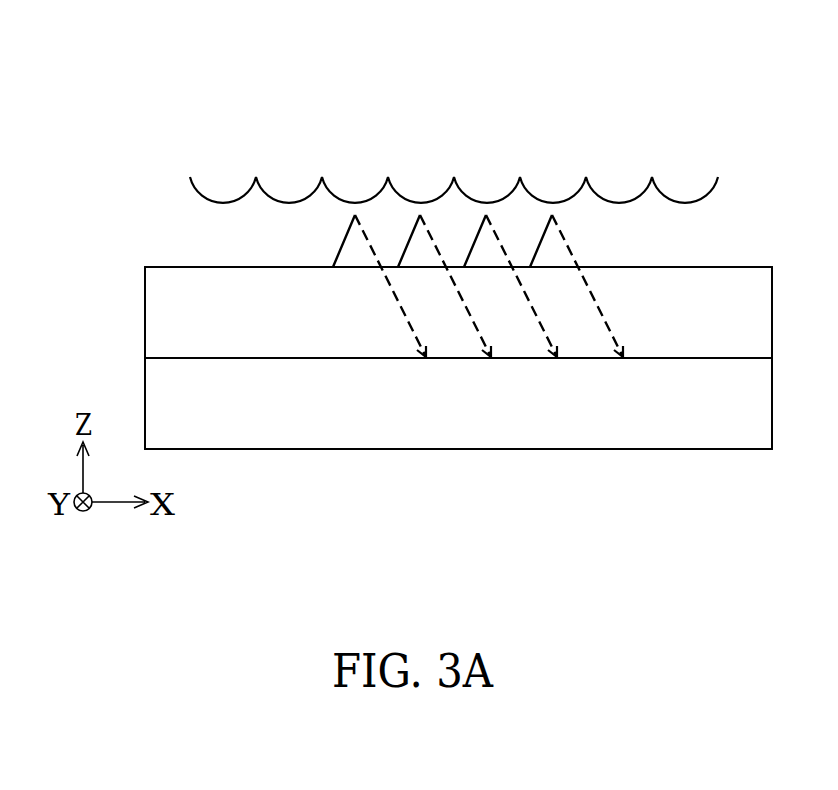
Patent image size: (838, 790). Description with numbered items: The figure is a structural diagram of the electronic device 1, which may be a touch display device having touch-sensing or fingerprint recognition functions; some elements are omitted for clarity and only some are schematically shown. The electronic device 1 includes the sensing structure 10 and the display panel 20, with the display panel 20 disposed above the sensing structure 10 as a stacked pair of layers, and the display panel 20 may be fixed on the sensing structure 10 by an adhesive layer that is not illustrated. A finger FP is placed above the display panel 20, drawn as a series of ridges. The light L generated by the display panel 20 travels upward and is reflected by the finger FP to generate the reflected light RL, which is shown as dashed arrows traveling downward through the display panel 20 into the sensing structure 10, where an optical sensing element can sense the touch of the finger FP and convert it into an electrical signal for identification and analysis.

The electronic device 1 is at (114, 110).
The sensing structure 10 is at (758, 408).
The display panel 20 is at (758, 319).
The finger FP is at (714, 200).
The light L is at (341, 243).
The reflected light RL is at (402, 314).